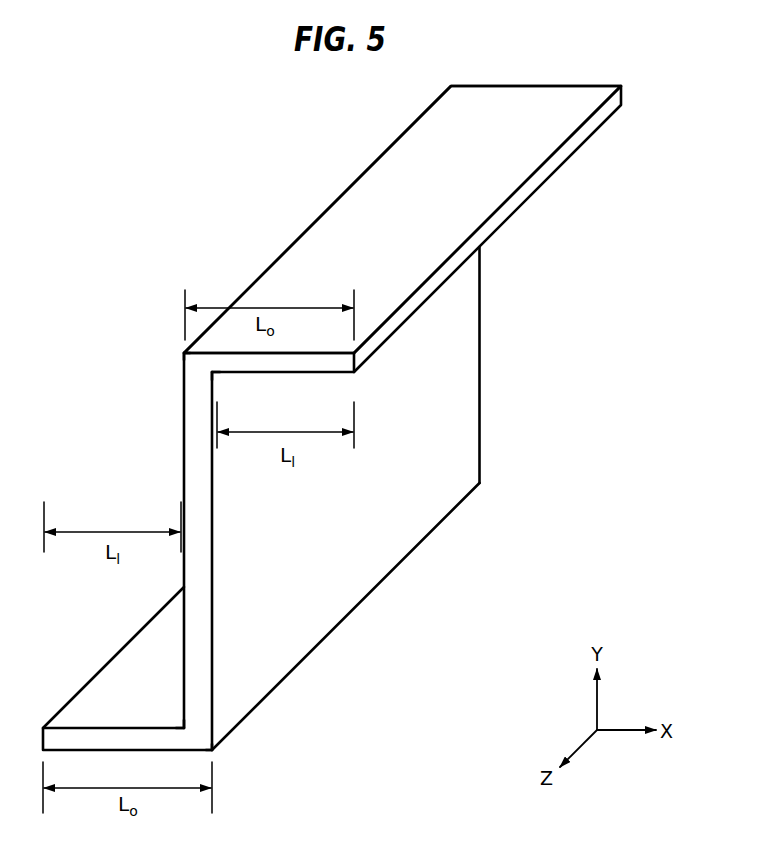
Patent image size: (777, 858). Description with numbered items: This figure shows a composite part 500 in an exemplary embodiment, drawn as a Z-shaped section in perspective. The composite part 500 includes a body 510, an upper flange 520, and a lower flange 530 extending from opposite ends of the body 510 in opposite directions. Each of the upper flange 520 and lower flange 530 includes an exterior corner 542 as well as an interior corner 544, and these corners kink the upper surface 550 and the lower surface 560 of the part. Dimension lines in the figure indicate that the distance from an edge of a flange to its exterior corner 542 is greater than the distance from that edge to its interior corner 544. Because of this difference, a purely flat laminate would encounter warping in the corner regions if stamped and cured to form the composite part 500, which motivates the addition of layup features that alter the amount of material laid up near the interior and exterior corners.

The composite part 500 is at (615, 410).
The body 510 is at (480, 297).
The upper flange 520 is at (513, 85).
The lower flange 530 is at (138, 657).
The exterior corner 542 is at (182, 351).
The interior corner 544 is at (217, 378).
The upper surface 550 is at (407, 172).
The lower surface 560 is at (340, 564).